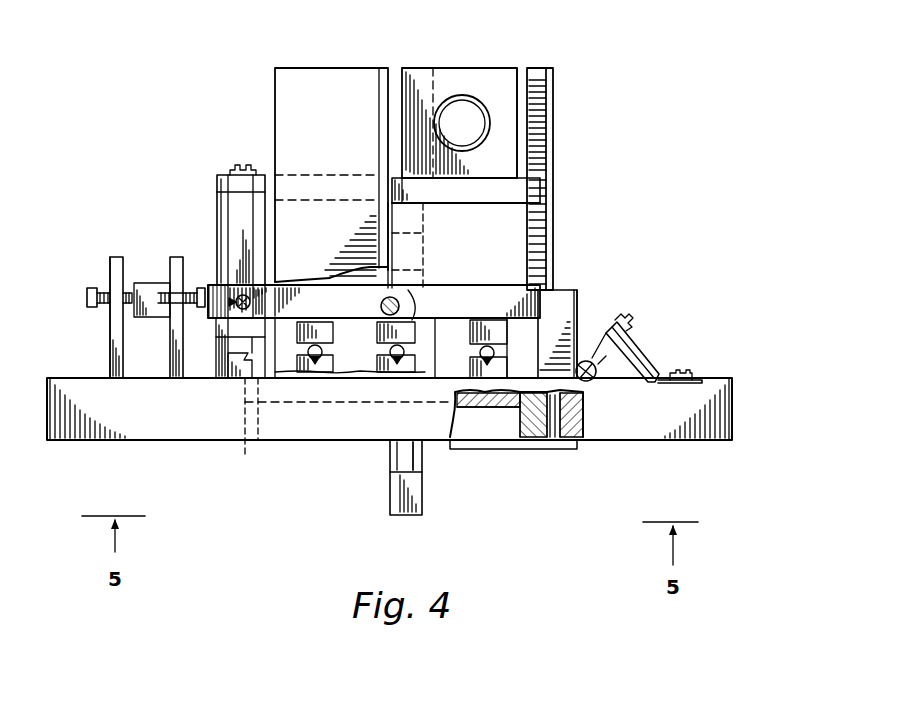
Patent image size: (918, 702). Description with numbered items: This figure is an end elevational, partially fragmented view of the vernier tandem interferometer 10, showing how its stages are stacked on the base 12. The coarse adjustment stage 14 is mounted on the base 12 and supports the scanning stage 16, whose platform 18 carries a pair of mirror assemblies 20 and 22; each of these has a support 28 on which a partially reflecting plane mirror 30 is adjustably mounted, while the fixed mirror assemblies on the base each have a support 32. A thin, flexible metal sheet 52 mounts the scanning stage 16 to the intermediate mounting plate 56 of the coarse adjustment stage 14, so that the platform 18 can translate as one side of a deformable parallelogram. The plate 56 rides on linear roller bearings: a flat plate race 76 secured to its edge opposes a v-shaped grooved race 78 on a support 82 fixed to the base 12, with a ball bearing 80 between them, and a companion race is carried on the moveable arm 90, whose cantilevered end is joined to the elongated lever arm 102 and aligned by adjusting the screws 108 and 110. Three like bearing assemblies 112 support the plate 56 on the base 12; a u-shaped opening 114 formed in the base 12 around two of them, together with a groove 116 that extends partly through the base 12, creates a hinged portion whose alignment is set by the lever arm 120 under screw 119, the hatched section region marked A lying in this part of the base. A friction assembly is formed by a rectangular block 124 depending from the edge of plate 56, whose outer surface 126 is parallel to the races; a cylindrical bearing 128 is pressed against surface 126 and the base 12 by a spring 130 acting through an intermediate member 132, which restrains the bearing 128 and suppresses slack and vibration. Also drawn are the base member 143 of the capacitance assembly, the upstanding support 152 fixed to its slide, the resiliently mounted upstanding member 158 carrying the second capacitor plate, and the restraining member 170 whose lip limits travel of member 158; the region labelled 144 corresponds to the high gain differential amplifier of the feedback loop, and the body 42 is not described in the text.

The vernier tandem interferometer 10 is at (567, 74).
The base 12 is at (742, 402).
The coarse adjustment stage 14 is at (134, 242).
The scanning stage 16 is at (223, 199).
The platform 18 is at (505, 200).
The mirror assembly 20 is at (458, 64).
The mirror assembly 22 is at (536, 62).
The support 28 is at (493, 72).
The partially reflecting mirror 30 is at (474, 134).
The support 32 is at (553, 108).
The body block 42 is at (310, 70).
The flexible metal sheet 52 is at (530, 206).
The intermediate mounting plate 56 is at (490, 296).
The flat plate race 76 is at (259, 300).
The v-shaped grooved race 78 is at (217, 293).
The ball bearing 80 is at (240, 295).
The support 82 is at (198, 372).
The moveable arm 90 is at (158, 370).
The elongated lever arm 102 is at (150, 318).
The screw 108 is at (162, 288).
The screw 110 is at (86, 297).
The bearing assembly 112 is at (375, 337).
The u-shaped opening 114 is at (558, 448).
The groove 116 is at (487, 432).
The screw 119 is at (420, 452).
The lever arm 120 is at (392, 489).
The rectangular block 124 is at (562, 292).
The outer surface 126 is at (582, 308).
The cylindrical bearing 128 is at (590, 380).
The spring 130 is at (634, 345).
The intermediate member 132 is at (646, 360).
The base member 143 is at (257, 372).
The high gain differential amplifier 144 is at (233, 365).
The upstanding support 152 is at (218, 216).
The upstanding resiliently mounted member 158 is at (233, 206).
The restraining member 170 is at (253, 148).
The section region A is at (508, 452).